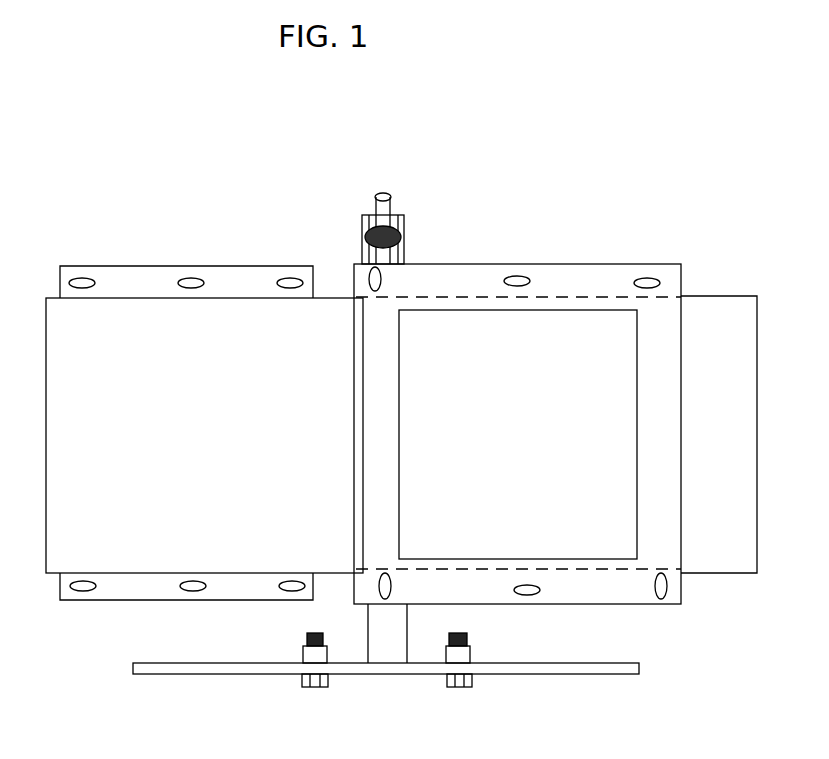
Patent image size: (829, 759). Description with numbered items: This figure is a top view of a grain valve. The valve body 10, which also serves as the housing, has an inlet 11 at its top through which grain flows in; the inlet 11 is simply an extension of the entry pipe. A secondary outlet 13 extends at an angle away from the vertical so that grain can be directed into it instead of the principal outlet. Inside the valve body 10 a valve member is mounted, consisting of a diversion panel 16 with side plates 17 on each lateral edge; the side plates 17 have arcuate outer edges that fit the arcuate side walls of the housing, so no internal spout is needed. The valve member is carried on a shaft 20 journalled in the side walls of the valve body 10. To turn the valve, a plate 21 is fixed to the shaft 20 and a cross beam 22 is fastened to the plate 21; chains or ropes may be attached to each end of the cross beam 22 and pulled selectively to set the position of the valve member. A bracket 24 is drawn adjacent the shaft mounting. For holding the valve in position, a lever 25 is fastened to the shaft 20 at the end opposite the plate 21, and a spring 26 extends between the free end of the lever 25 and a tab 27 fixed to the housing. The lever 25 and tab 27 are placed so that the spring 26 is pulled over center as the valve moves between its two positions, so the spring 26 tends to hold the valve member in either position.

The valve body 10 is at (204, 435).
The inlet 11 is at (583, 282).
The secondary outlet 13 is at (147, 585).
The diversion panel 16 is at (518, 434).
The side plates 17 is at (478, 314).
The shaft 20 is at (387, 630).
The plate 21 is at (470, 650).
The cross beam 22 is at (257, 668).
The bracket 24 is at (383, 239).
The lever 25 is at (390, 193).
The spring 26 is at (367, 243).
The tab 27 is at (376, 197).